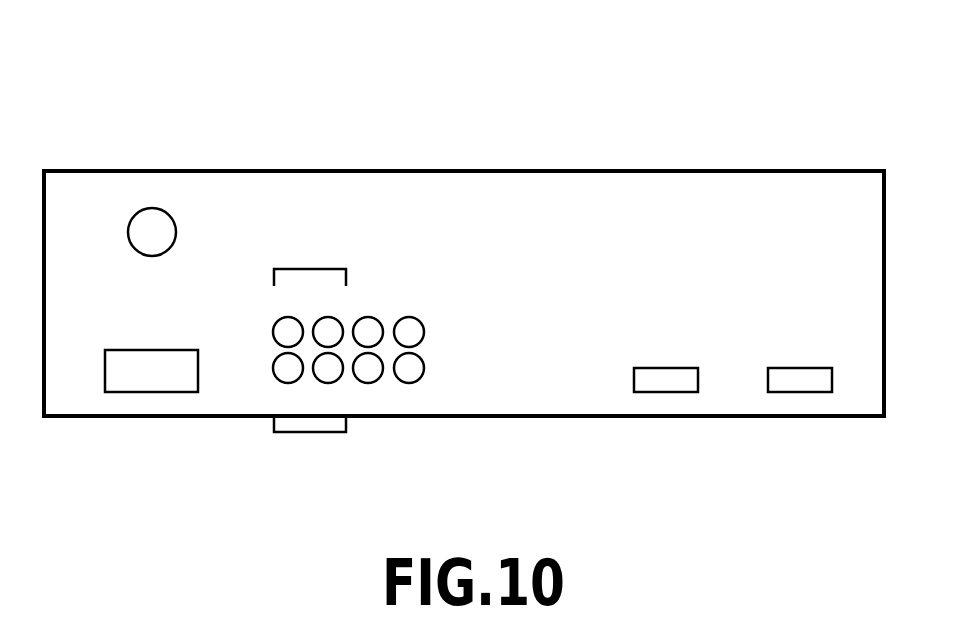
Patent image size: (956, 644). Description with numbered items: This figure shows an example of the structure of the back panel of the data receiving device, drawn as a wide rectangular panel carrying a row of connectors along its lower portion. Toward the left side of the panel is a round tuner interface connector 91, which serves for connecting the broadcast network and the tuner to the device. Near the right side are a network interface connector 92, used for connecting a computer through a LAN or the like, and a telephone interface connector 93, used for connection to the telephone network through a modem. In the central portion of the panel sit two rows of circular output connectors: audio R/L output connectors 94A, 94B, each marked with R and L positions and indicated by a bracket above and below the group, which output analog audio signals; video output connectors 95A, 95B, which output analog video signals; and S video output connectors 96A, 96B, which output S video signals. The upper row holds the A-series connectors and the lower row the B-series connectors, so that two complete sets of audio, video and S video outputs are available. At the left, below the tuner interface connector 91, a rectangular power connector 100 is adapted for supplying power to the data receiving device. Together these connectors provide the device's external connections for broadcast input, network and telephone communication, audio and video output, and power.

The tuner interface connector 91 is at (151, 208).
The network interface connector 92 is at (666, 392).
The telephone interface connector 93 is at (800, 392).
The audio R/L output connector 94A is at (308, 268).
The audio R/L output connector 94B is at (310, 432).
The video output connector 95A is at (368, 317).
The video output connector 95B is at (368, 383).
The S video output connector 96A is at (408, 317).
The S video output connector 96B is at (409, 383).
The power connector 100 is at (153, 392).